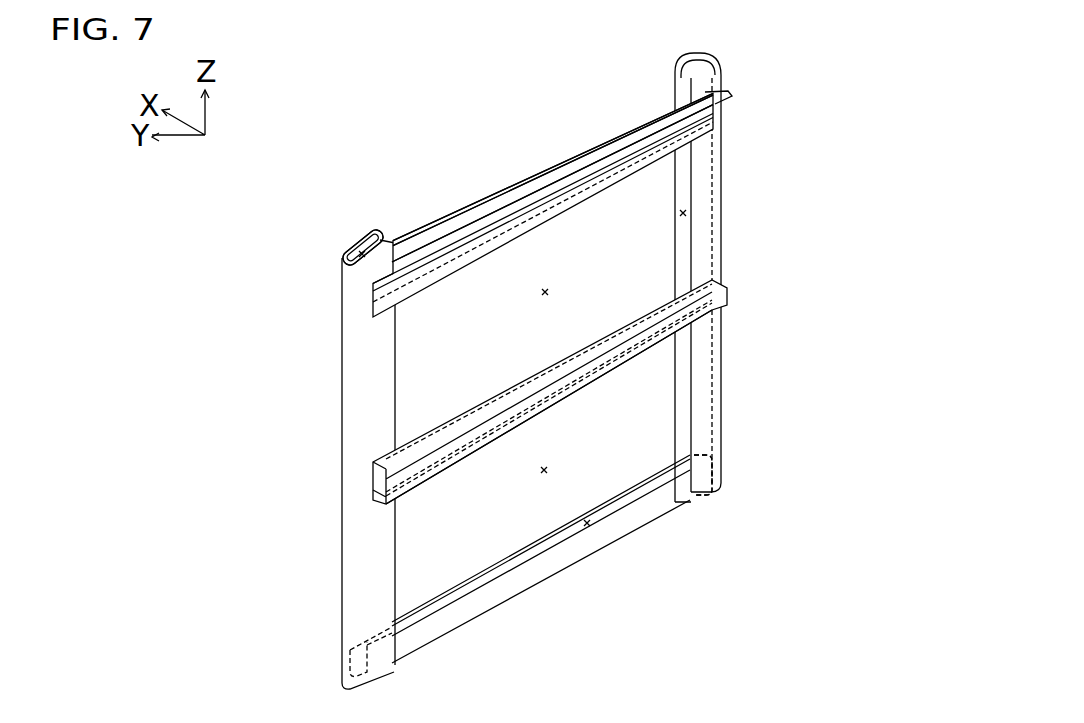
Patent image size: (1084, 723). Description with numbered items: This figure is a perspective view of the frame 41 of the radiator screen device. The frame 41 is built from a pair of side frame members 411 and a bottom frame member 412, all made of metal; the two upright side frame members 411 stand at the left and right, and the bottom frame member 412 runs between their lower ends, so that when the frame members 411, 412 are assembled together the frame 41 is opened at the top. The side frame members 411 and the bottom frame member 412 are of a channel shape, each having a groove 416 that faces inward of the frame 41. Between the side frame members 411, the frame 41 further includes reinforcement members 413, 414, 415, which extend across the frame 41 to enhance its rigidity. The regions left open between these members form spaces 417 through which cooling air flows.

The frame 41 is at (394, 142).
The side frame members 411 is at (703, 382).
The bottom frame member 412 is at (531, 588).
The reinforcement member 413 is at (590, 162).
The reinforcement member 414 is at (501, 194).
The reinforcement member 415 is at (471, 414).
The groove 416 is at (358, 250).
The spaces 417 is at (548, 292).